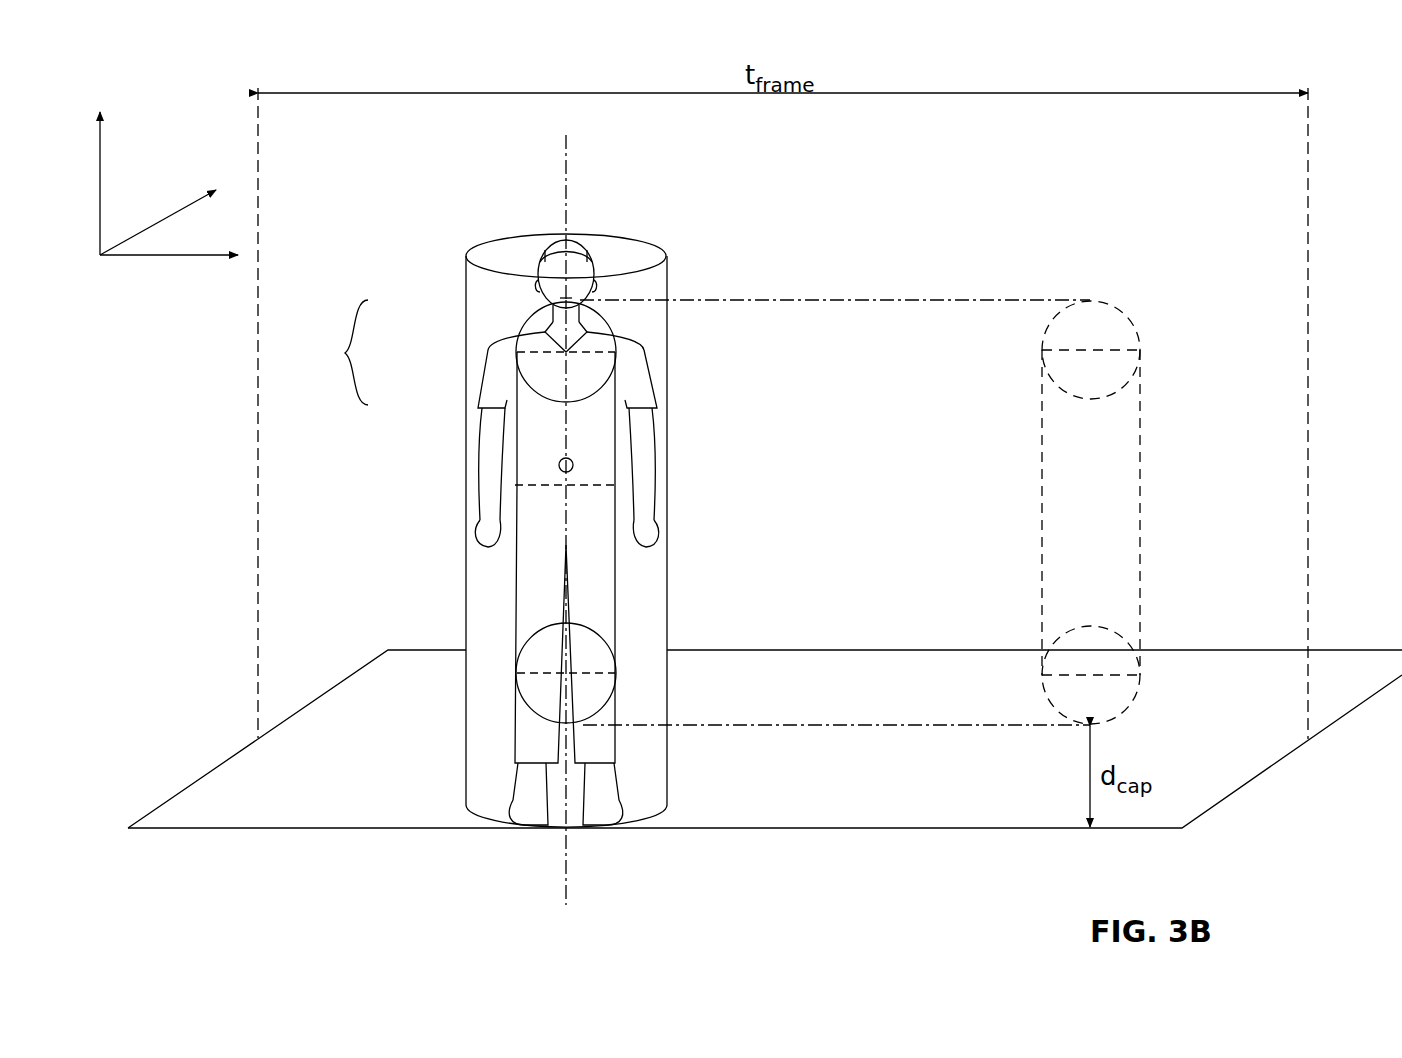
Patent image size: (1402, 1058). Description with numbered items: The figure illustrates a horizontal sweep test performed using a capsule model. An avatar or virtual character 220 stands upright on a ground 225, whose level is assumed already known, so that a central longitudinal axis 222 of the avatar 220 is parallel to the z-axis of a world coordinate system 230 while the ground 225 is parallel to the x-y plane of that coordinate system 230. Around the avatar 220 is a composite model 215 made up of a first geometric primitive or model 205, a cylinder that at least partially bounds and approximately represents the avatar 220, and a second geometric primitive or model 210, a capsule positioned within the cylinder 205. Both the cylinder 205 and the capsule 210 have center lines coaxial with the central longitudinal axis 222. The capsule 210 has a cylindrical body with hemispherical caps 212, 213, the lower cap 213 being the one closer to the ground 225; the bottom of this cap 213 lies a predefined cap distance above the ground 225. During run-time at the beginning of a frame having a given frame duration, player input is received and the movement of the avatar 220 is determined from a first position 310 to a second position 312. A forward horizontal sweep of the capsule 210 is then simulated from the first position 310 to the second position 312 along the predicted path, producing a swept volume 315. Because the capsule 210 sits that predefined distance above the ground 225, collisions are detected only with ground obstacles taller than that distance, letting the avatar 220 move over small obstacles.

The first geometric primitive or model 205 is at (466, 342).
The second geometric primitive or model 210 is at (514, 437).
The first cap 212 is at (590, 318).
The second cap 213 is at (527, 715).
The composite model 215 is at (331, 352).
The avatar or virtual character 220 is at (484, 463).
The central longitudinal axis 222 is at (565, 148).
The ground 225 is at (245, 800).
The world coordinate system 230 is at (146, 118).
The first position 310 is at (519, 486).
The second position 312 is at (1093, 296).
The swept volume 315 is at (868, 300).